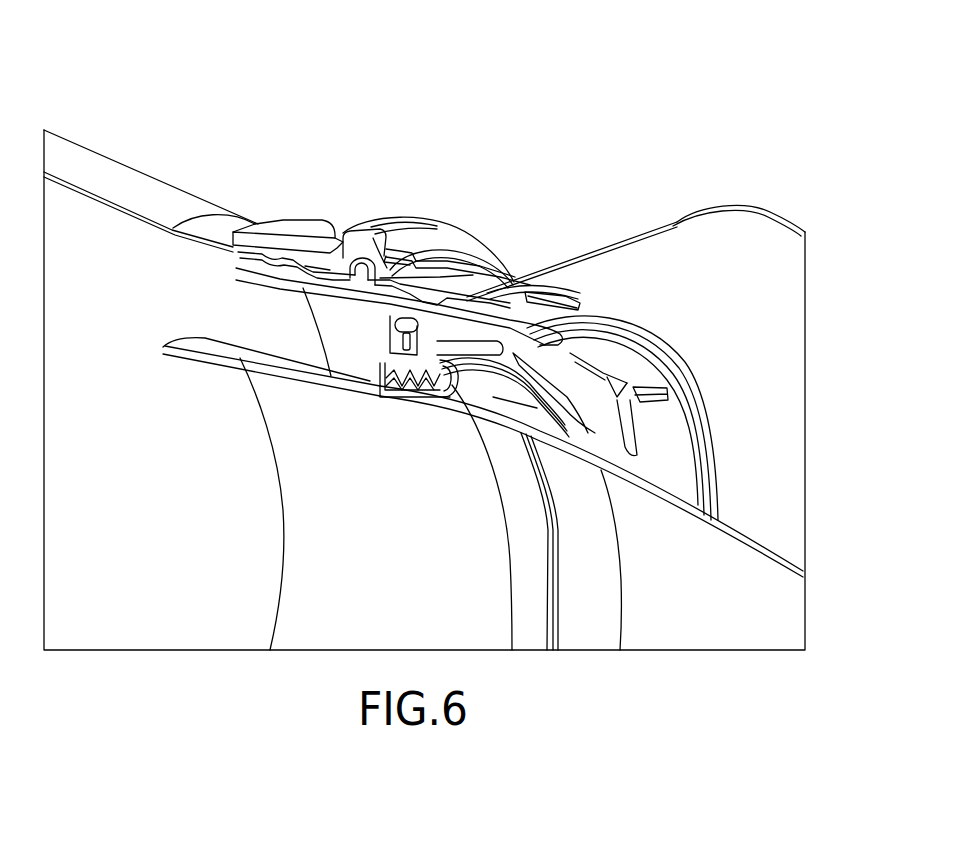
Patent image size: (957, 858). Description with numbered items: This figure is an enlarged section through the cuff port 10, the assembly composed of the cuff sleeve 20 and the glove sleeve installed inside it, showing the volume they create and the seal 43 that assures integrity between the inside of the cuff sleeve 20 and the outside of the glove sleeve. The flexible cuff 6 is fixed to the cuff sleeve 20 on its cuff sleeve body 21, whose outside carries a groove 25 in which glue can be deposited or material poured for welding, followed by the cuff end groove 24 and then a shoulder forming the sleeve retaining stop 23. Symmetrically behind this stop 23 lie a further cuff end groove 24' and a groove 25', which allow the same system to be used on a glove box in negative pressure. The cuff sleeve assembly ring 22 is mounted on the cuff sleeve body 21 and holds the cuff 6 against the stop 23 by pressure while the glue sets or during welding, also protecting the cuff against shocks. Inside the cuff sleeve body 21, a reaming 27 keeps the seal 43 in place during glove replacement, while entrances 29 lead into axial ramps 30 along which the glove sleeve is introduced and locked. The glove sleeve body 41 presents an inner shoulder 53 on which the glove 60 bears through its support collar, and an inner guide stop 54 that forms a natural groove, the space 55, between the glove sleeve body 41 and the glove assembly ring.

The cuff 6 is at (165, 202).
The cuff port 10 is at (585, 167).
The cuff sleeve 20 is at (422, 167).
The cuff sleeve body 21 is at (559, 316).
The cuff sleeve assembly ring 22 is at (437, 243).
The sleeve retaining stop 23 is at (364, 268).
The cuff end groove 24 is at (315, 354).
The cuff end groove 24' is at (247, 352).
The groove 25 is at (454, 221).
The groove 25' is at (227, 279).
The reaming 27 is at (280, 286).
The entrance 29 is at (677, 392).
The axial ramp 30 is at (627, 377).
The glove sleeve body 41 is at (383, 347).
The seal 43 is at (462, 298).
The inner shoulder 53 is at (435, 395).
The inner guide stop 54 is at (375, 382).
The space 55 is at (384, 375).
The glove 60 is at (677, 498).